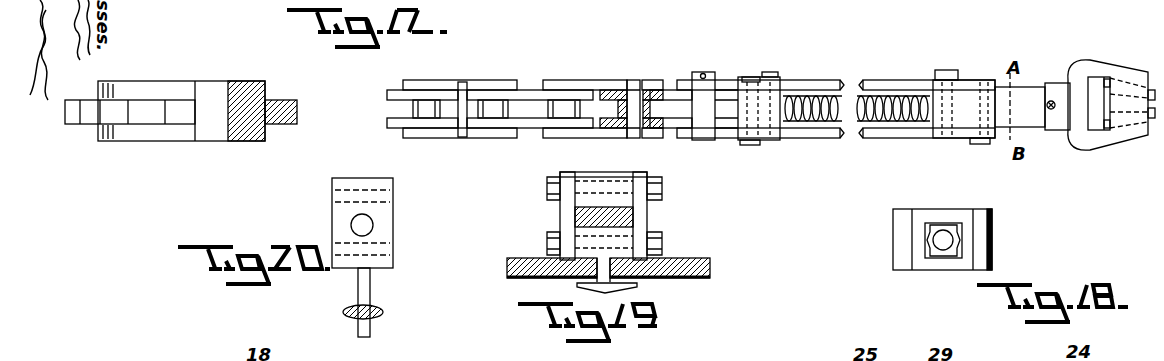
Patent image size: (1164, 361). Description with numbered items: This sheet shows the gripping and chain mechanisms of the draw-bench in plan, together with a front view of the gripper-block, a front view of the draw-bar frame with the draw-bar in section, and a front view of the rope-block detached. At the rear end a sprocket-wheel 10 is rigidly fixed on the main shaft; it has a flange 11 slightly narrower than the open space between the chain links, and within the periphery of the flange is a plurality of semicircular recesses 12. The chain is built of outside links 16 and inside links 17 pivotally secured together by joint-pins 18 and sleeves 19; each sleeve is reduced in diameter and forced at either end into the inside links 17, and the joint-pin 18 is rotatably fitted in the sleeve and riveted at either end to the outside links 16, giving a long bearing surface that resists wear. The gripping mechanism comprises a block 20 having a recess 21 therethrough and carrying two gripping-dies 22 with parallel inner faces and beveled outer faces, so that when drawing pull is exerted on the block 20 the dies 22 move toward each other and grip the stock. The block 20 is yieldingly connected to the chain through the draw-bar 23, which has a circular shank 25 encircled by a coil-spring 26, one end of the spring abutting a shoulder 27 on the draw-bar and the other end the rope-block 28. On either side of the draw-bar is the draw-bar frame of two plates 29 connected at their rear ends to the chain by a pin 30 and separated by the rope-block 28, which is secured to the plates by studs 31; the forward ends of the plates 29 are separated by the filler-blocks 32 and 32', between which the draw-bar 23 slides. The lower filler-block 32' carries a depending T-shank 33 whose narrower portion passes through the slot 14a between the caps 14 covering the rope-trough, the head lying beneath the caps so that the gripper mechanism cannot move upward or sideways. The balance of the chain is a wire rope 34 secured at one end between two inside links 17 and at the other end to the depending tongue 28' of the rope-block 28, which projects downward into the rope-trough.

In FIG. 17, the sprocket-wheel 10 is at (156, 141).
In FIG. 17, the flange 11 is at (298, 107).
In FIG. 17, the semicircular recesses 12 is at (177, 102).
In FIG. 17, the outside links 16 is at (470, 81).
In FIG. 17, the inside links 17 is at (525, 90).
In FIG. 17, the joint-pins 18 is at (637, 80).
In FIG. 17, the sleeves 19 is at (613, 90).
In FIG. 17, the block 20 is at (1100, 62).
In FIG. 18, the block 20 is at (937, 209).
In FIG. 17, the recess 21 is at (1095, 80).
In FIG. 17, the gripping-dies 22 is at (1107, 112).
In FIG. 18, the gripping-dies 22 is at (957, 239).
In FIG. 19, the draw-bar 23 is at (575, 217).
In FIG. 17, the circular shank 25 is at (840, 116).
In FIG. 17, the coil-spring 26 is at (920, 112).
In FIG. 17, the shoulder 27 is at (930, 90).
In FIG. 20, the rope-block 28 is at (384, 223).
In FIG. 20, the depending tongue 28' is at (387, 302).
In FIG. 17, the plates 29 is at (808, 80).
In FIG. 19, the plates 29 is at (640, 210).
In FIG. 17, the pin 30 is at (710, 72).
In FIG. 17, the studs 31 is at (757, 142).
In FIG. 19, the filler-block 32 is at (607, 163).
In FIG. 19, the lower filler-block 32' is at (622, 229).
In FIG. 19, the depending T-shank 33 is at (640, 285).
In FIG. 20, the wire rope 34 is at (384, 312).
In FIG. 19, the caps 14 is at (515, 270).
In FIG. 19, the open space 14a is at (617, 267).